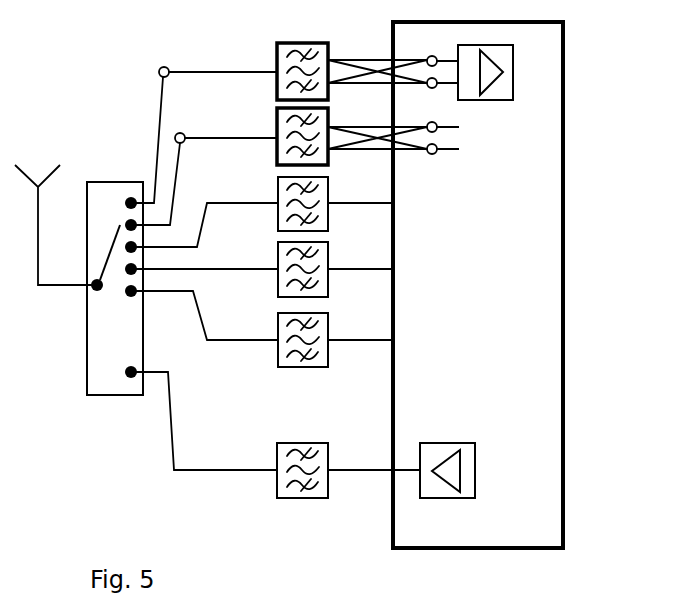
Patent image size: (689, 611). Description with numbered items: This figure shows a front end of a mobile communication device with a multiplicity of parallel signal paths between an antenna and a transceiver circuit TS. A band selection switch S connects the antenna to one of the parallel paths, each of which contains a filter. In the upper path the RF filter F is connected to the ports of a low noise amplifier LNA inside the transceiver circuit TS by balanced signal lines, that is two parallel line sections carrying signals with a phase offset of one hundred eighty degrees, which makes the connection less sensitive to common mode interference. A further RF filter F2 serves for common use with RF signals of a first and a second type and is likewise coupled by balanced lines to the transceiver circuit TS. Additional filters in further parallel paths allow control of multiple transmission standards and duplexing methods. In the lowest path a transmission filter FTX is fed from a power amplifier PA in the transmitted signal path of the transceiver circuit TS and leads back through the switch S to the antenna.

The band selection switch S is at (105, 395).
The RF filter F is at (277, 60).
The further RF filter F2 is at (277, 128).
The transmission filter FTX is at (312, 498).
The transceiver circuit TS is at (563, 235).
The low noise amplifier LNA is at (513, 70).
The power amplifier PA is at (475, 472).